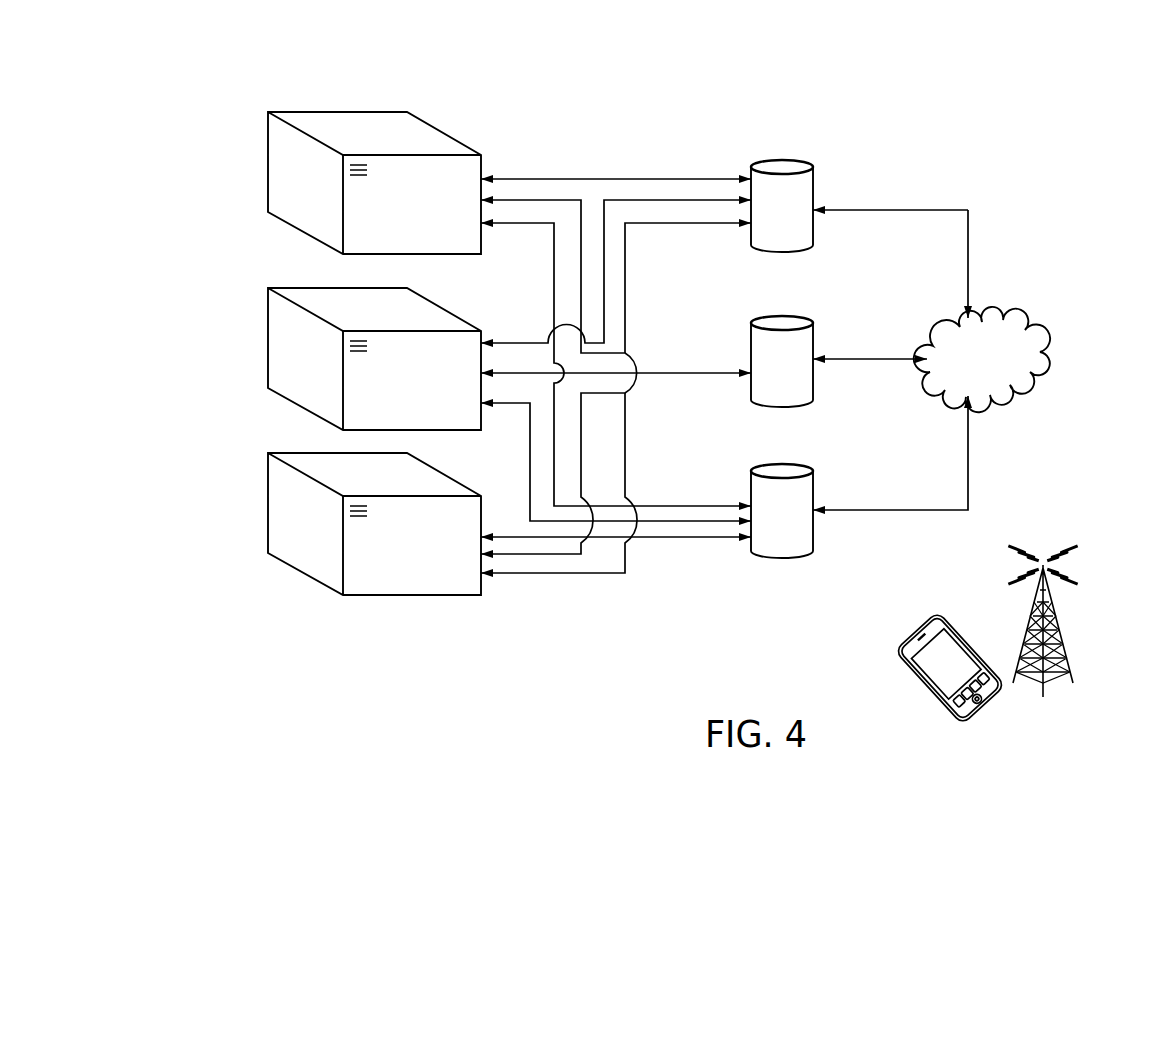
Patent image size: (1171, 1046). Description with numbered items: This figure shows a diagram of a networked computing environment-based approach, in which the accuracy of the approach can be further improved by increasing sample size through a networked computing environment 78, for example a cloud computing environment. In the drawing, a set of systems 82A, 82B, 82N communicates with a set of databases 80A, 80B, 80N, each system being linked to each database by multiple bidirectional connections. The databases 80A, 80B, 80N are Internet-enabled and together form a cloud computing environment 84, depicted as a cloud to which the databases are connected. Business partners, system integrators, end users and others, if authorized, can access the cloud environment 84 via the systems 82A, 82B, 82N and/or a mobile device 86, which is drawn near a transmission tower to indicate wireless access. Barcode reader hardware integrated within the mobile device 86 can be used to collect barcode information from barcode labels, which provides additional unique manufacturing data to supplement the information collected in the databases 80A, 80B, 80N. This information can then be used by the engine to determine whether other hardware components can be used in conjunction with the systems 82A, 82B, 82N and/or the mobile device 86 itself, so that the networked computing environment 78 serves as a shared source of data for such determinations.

The networked computing environment 78 is at (1085, 167).
The database 80A is at (813, 189).
The database 80B is at (813, 344).
The database 80N is at (813, 491).
The system 82A is at (268, 172).
The system 82B is at (268, 348).
The system 82N is at (268, 502).
The cloud computing environment 84 is at (1043, 358).
The mobile device 86 is at (931, 612).